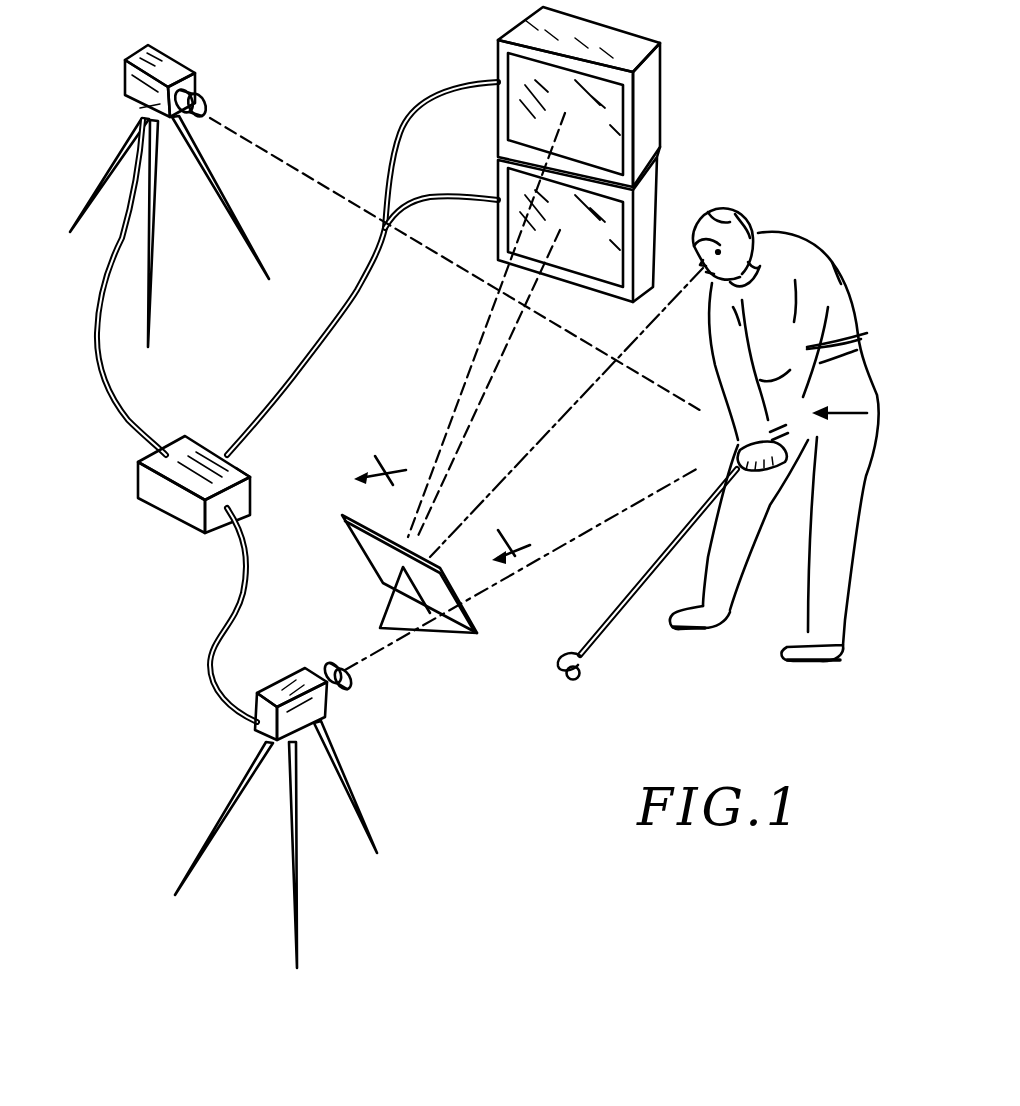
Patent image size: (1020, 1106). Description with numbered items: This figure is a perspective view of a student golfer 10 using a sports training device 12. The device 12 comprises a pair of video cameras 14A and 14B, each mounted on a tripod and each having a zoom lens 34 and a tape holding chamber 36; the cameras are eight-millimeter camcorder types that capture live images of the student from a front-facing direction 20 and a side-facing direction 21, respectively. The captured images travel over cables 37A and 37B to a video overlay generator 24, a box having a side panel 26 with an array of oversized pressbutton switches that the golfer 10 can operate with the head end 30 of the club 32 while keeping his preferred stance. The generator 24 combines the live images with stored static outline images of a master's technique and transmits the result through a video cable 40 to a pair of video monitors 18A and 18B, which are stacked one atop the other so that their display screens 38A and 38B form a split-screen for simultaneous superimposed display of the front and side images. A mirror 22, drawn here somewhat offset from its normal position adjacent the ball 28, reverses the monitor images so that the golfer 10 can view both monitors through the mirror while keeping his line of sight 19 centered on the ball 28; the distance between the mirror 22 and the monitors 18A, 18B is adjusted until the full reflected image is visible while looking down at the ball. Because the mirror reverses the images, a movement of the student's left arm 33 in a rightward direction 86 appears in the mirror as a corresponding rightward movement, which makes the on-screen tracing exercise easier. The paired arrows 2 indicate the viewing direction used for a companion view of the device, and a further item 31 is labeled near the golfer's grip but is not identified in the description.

The student golfer 10 is at (854, 280).
The sports training device 12 is at (524, 786).
The video camera 14A is at (288, 683).
The video camera 14B is at (172, 63).
The video monitor 18A is at (663, 96).
The video monitor 18B is at (663, 208).
The line of sight 19 is at (568, 419).
The viewing direction of FIG. 2 is at (454, 498).
The front-facing direction 20 is at (427, 623).
The side-facing direction 21 is at (325, 187).
The mirror 22 is at (367, 561).
The video overlay generator 24 is at (177, 526).
The side panel 26 is at (252, 465).
The ball 28 is at (580, 682).
The head end 30 is at (566, 666).
The camera sight line to grip 31 is at (737, 463).
The club 32 is at (630, 601).
The left arm 33 is at (810, 351).
The zoom lens 34 is at (207, 104).
The tape holding chamber 36 is at (129, 103).
The cable 37A is at (214, 687).
The cable 37B is at (108, 364).
The display screen 38A is at (517, 78).
The display screen 38B is at (517, 191).
The video cable 40 is at (348, 333).
The rightward direction 86 is at (843, 418).